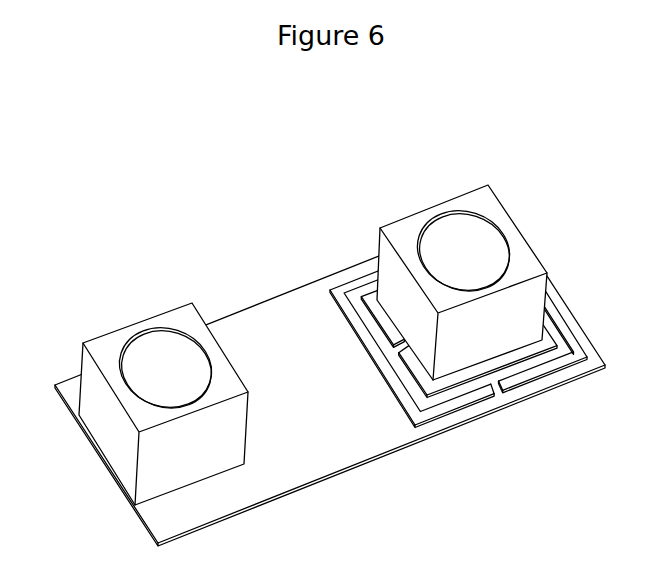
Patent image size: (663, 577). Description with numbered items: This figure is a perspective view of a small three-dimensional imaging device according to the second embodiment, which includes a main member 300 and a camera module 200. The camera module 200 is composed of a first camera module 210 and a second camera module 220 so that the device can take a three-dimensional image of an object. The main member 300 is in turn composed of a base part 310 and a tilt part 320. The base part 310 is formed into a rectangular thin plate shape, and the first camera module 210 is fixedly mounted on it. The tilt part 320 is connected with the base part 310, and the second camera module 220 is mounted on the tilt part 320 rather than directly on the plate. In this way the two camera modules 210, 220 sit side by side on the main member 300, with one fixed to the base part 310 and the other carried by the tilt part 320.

The camera module 200 is at (313, 304).
The first camera module 210 is at (163, 374).
The second camera module 220 is at (459, 248).
The main member 300 is at (330, 376).
The base part 310 is at (313, 443).
The tilt part 320 is at (458, 341).